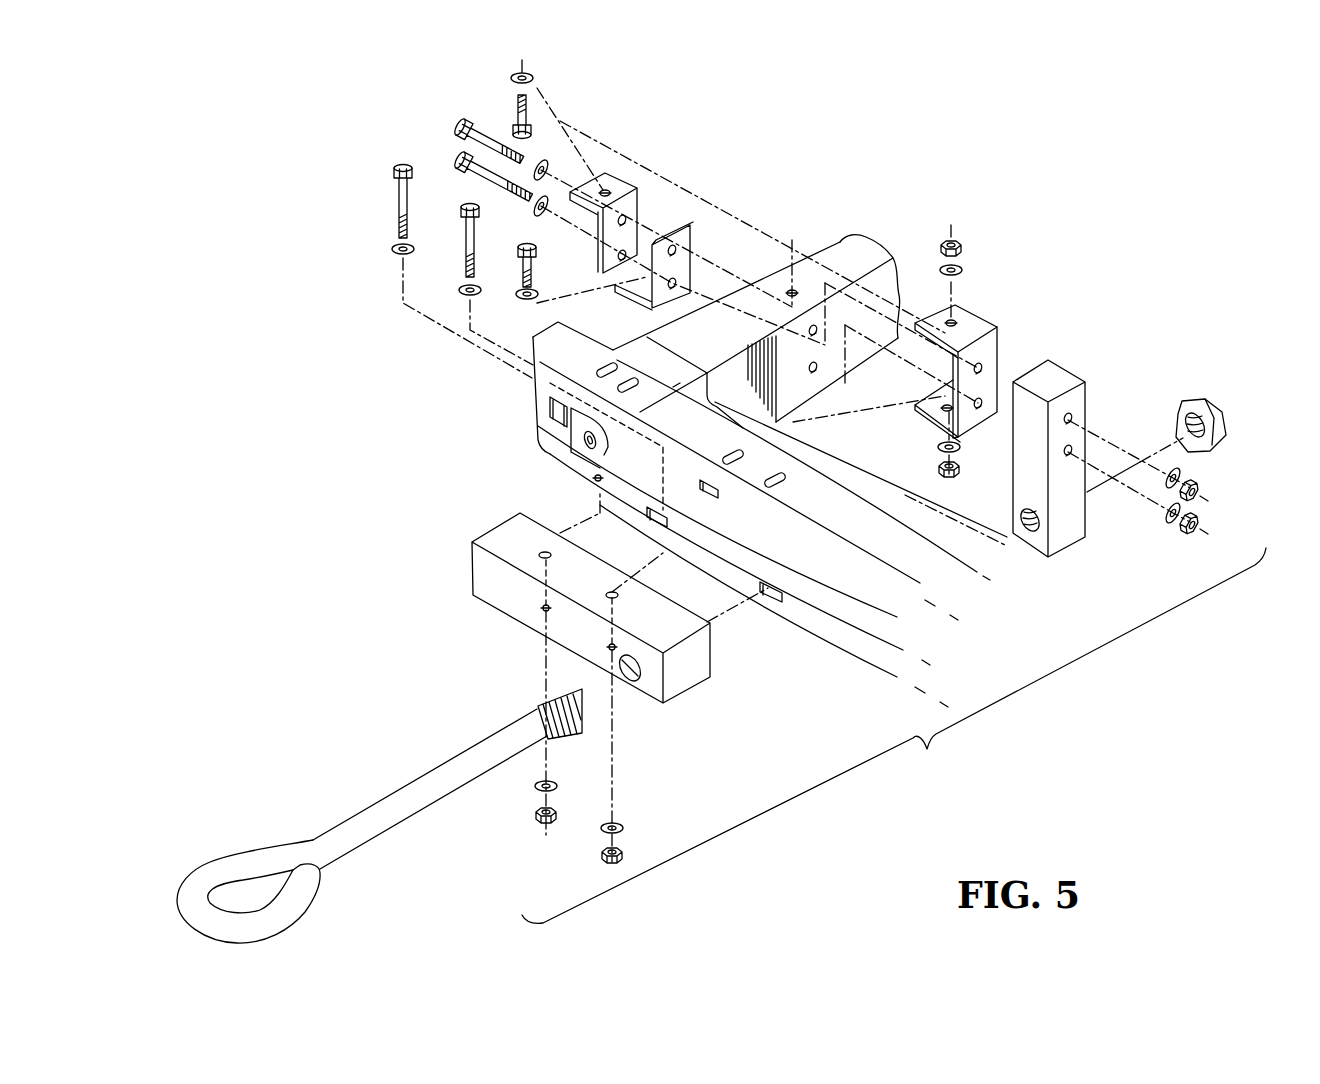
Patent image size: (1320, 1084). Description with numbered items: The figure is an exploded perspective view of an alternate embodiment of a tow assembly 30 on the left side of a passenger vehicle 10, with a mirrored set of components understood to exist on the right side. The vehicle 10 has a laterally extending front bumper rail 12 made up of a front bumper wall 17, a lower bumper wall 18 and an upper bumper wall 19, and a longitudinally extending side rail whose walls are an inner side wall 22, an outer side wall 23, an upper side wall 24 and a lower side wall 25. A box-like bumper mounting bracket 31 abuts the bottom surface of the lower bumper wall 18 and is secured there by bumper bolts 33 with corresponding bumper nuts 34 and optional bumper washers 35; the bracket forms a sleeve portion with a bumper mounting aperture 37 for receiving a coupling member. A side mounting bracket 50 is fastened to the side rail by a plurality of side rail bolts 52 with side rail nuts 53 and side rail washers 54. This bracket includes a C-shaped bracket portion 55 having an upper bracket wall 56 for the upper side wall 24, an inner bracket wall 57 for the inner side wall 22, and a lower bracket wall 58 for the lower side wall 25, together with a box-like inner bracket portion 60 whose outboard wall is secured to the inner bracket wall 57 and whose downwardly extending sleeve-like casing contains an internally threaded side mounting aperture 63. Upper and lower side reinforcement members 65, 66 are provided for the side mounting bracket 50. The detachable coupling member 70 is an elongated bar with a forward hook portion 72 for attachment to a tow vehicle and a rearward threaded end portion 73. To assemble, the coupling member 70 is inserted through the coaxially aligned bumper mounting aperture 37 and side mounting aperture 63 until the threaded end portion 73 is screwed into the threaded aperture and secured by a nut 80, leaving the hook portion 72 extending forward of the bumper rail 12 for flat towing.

The passenger vehicle 10 is at (862, 230).
The front bumper rail 12 is at (532, 421).
The front bumper wall 17 is at (828, 618).
The lower bumper wall 18 is at (857, 655).
The upper bumper wall 19 is at (822, 512).
The inner side wall 22 is at (813, 378).
The outer side wall 23 is at (790, 285).
The upper side wall 24 is at (812, 270).
The lower side wall 25 is at (773, 418).
The tow assembly 30 is at (978, 730).
The bumper mounting bracket 31 is at (498, 536).
The bumper bolt 33 is at (468, 233).
The bumper nut 34 is at (603, 860).
The bumper washer 35 is at (412, 253).
The bumper mounting aperture 37 is at (636, 678).
The side mounting bracket 50 is at (1048, 354).
The side rail bolt 52 is at (523, 243).
The side rail nut 53 is at (960, 244).
The side rail washer 54 is at (510, 80).
The C-shaped bracket portion 55 is at (985, 318).
The upper bracket wall 56 is at (943, 318).
The inner bracket wall 57 is at (975, 400).
The lower bracket wall 58 is at (963, 432).
The inner bracket portion 60 is at (1074, 552).
The side mounting aperture 63 is at (1030, 530).
The upper side reinforcement member 65 is at (618, 185).
The lower side reinforcement member 66 is at (672, 231).
The detachable coupling member 70 is at (415, 774).
The forward hook portion 72 is at (215, 868).
The rearward threaded end portion 73 is at (555, 694).
The nut 80 is at (1200, 398).